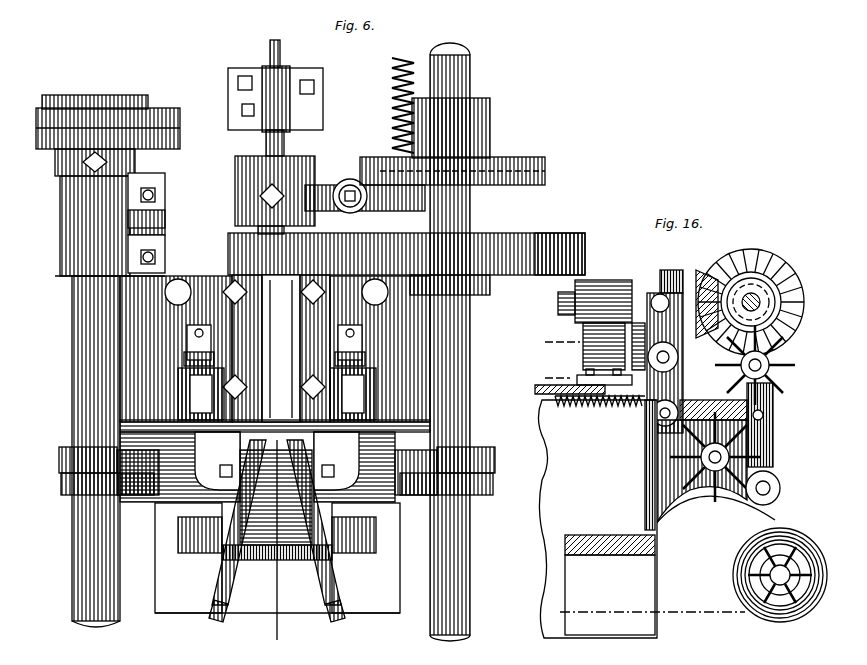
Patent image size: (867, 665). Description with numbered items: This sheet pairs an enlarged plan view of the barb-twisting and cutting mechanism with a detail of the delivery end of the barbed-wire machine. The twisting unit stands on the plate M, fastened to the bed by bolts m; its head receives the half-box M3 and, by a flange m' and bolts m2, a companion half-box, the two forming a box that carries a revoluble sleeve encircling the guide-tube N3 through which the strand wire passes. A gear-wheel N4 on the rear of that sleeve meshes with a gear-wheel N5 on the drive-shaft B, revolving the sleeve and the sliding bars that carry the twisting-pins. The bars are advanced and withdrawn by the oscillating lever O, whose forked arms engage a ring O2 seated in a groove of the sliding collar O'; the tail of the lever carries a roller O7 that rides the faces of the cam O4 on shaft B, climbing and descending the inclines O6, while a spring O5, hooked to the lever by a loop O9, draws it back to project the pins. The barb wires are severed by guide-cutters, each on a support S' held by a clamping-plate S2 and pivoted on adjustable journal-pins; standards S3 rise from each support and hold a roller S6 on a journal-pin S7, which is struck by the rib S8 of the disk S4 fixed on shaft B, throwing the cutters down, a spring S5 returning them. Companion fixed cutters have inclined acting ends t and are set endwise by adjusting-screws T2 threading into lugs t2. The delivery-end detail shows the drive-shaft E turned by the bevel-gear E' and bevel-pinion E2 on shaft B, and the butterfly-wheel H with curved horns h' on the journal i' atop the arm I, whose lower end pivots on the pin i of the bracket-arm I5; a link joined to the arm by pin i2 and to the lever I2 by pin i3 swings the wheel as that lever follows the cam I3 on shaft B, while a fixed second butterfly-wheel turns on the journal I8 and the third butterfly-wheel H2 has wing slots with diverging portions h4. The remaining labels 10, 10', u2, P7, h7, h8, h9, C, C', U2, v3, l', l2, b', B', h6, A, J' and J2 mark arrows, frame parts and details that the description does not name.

In FIG. 6, the direction arrow 10 is at (266, 549).
In FIG. 6, the direction arrow 10' is at (249, 48).
In FIG. 6, the guide block u2 is at (248, 95).
In FIG. 6, the guide-tube N3 is at (284, 72).
In FIG. 6, the cap P7 is at (150, 90).
In FIG. 6, the bearing h7 is at (170, 118).
In FIG. 6, the bearing h8 is at (178, 137).
In FIG. 6, the pin h9 is at (100, 162).
In FIG. 6, the column C is at (100, 388).
In FIG. 6, the bracket C' is at (153, 223).
In FIG. 6, the oscillating lever O is at (365, 198).
In FIG. 6, the sliding collar O' is at (238, 175).
In FIG. 6, the ring O2 is at (250, 212).
In FIG. 6, the cam O4 is at (372, 170).
In FIG. 6, the spring O5 is at (398, 78).
In FIG. 6, the incline O6 is at (488, 168).
In FIG. 16, the incline O6 is at (677, 657).
In FIG. 6, the roller O7 is at (496, 207).
In FIG. 6, the loop O9 is at (395, 190).
In FIG. 6, the stop U2 is at (380, 98).
In FIG. 6, the pivot pin v3 is at (350, 185).
In FIG. 6, the drive-shaft B is at (455, 342).
In FIG. 6, the gear-wheel N4 is at (228, 246).
In FIG. 16, the gear-wheel N5 is at (570, 262).
In FIG. 6, the plate M is at (415, 355).
In FIG. 6, the half-box M3 is at (281, 348).
In FIG. 6, the bolts m is at (320, 447).
In FIG. 6, the flange m' is at (351, 290).
In FIG. 6, the bolts m2 is at (300, 292).
In FIG. 6, the support or base S' is at (246, 440).
In FIG. 6, the clamping-plate S2 is at (420, 440).
In FIG. 6, the standard or upright S3 is at (190, 331).
In FIG. 6, the disk S4 is at (60, 458).
In FIG. 6, the spring S5 is at (188, 360).
In FIG. 6, the roller S6 is at (120, 470).
In FIG. 6, the journal-pin S7 is at (430, 420).
In FIG. 6, the projection or rib S8 is at (120, 420).
In FIG. 6, the adjusting-screw T2 is at (246, 608).
In FIG. 6, the tool holder l' is at (236, 475).
In FIG. 6, the tool holder l2 is at (239, 493).
In FIG. 6, the acting end t is at (299, 493).
In FIG. 6, the lug or ear t2 is at (239, 510).
In FIG. 16, the shaft b' is at (595, 287).
In FIG. 16, the bearing B' is at (595, 354).
In FIG. 16, the arm or bar I is at (714, 400).
In FIG. 16, the lever or bar I2 is at (650, 296).
In FIG. 16, the cam I3 is at (668, 270).
In FIG. 16, the bracket-arm I5 is at (775, 458).
In FIG. 16, the journal or pin I8 is at (645, 413).
In FIG. 16, the pin or pivot i is at (767, 488).
In FIG. 16, the journal or pin i' is at (761, 365).
In FIG. 16, the pin or pivot i2 is at (765, 416).
In FIG. 16, the pin or pivot i3 is at (655, 400).
In FIG. 16, the drive-shaft E is at (753, 302).
In FIG. 16, the bevel-gear E' is at (786, 248).
In FIG. 16, the bevel-pinion E2 is at (708, 270).
In FIG. 16, the butterfly-wheel H is at (772, 376).
In FIG. 16, the third butterfly-wheel H2 is at (785, 560).
In FIG. 16, the horns or arms h' is at (711, 520).
In FIG. 16, the diverging portion h4 is at (800, 578).
In FIG. 16, the pin h6 is at (755, 580).
In FIG. 16, the frame A is at (545, 405).
In FIG. 16, the bed J' is at (652, 595).
In FIG. 16, the plate J2 is at (656, 548).